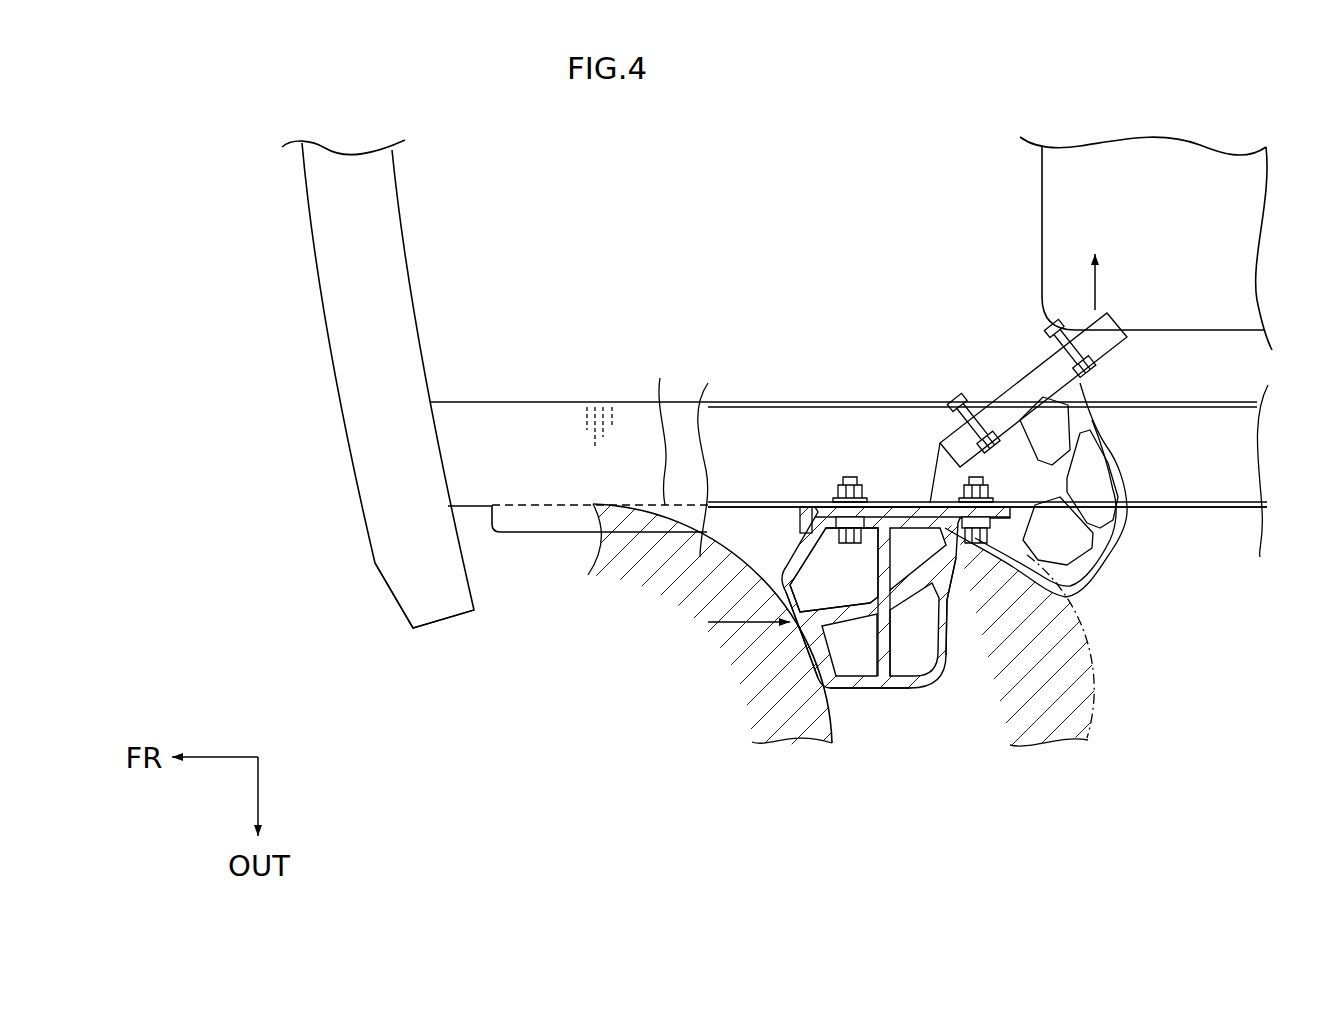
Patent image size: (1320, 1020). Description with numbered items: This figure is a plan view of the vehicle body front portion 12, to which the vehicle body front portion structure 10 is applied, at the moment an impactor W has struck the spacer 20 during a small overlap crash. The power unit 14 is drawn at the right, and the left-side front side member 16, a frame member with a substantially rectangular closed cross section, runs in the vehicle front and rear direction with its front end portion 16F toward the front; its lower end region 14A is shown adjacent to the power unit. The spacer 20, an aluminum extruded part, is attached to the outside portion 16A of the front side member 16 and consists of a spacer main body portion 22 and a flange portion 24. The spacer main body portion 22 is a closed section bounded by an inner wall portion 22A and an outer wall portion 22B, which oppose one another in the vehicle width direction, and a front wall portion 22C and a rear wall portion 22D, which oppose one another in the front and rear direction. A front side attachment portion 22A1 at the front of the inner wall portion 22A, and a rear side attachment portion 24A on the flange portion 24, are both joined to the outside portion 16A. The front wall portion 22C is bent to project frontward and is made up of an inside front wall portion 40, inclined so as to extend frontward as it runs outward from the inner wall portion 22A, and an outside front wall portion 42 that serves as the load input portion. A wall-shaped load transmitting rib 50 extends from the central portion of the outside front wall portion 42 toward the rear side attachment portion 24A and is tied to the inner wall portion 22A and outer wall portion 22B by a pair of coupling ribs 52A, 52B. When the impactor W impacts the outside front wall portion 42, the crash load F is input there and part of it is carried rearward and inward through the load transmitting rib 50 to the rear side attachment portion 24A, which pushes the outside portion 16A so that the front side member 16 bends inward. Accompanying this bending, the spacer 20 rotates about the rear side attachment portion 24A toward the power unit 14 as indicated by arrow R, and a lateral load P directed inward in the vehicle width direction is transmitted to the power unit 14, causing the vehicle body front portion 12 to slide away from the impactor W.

The vehicle body front portion structure 10 is at (872, 165).
The vehicle body front portion 12 is at (824, 234).
The power unit 14 is at (410, 233).
The lower end of pillar 14A is at (400, 603).
The front side member 16 is at (1202, 400).
The front end portion of front side member 16F is at (485, 401).
The outside portion of front side member 16A is at (1207, 510).
The spacer 20 is at (879, 592).
The spacer main body portion 22 is at (879, 568).
The inner wall portion 22A is at (903, 512).
The front side attachment portion 22A1 is at (822, 510).
The outer wall portion 22B is at (865, 690).
The front wall portion 22C is at (815, 703).
The rear wall portion 22D is at (947, 615).
The flange portion 24 is at (1028, 466).
The rear side attachment portion 24A is at (935, 503).
The inside front wall portion 40 is at (802, 556).
The outside front wall portion 42 is at (793, 632).
The load transmitting rib 50 is at (840, 600).
The coupling rib 52A is at (897, 527).
The coupling rib 52B is at (890, 655).
The impactor W is at (662, 424).
The crash load F is at (730, 624).
The lateral load P is at (1098, 283).
The arrow R is at (1078, 660).